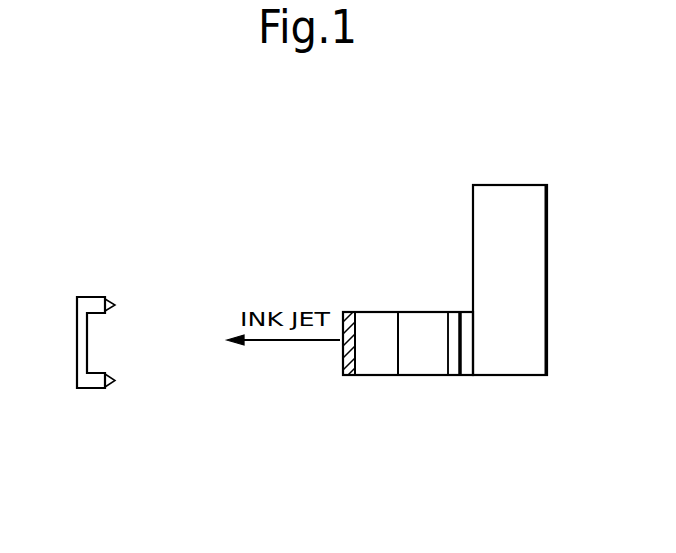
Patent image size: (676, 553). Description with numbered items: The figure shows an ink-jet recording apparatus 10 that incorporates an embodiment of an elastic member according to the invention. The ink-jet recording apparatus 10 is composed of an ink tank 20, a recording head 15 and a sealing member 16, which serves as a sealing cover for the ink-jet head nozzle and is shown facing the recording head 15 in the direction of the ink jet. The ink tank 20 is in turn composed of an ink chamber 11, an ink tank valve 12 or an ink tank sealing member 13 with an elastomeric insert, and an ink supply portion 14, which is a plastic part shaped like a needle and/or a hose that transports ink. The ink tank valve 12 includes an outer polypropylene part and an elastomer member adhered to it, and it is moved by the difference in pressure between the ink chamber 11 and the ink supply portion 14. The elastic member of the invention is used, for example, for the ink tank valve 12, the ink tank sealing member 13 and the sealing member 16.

The ink-jet recording apparatus 10 is at (538, 160).
The ink chamber 11 is at (510, 375).
The ink tank valve 12 is at (467, 363).
The ink tank sealing member 13 is at (454, 343).
The ink supply portion 14 is at (427, 375).
The recording head 15 is at (373, 375).
The sealing member 16 is at (90, 388).
The ink tank 20 is at (560, 458).